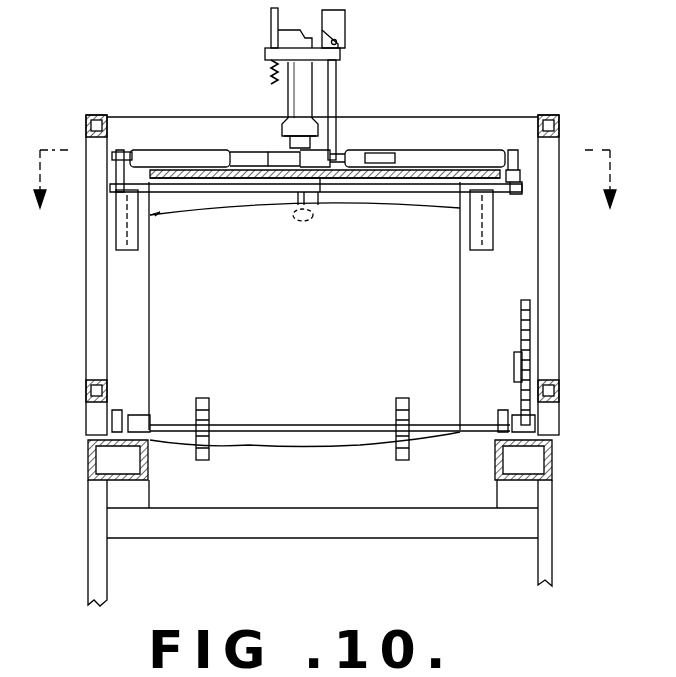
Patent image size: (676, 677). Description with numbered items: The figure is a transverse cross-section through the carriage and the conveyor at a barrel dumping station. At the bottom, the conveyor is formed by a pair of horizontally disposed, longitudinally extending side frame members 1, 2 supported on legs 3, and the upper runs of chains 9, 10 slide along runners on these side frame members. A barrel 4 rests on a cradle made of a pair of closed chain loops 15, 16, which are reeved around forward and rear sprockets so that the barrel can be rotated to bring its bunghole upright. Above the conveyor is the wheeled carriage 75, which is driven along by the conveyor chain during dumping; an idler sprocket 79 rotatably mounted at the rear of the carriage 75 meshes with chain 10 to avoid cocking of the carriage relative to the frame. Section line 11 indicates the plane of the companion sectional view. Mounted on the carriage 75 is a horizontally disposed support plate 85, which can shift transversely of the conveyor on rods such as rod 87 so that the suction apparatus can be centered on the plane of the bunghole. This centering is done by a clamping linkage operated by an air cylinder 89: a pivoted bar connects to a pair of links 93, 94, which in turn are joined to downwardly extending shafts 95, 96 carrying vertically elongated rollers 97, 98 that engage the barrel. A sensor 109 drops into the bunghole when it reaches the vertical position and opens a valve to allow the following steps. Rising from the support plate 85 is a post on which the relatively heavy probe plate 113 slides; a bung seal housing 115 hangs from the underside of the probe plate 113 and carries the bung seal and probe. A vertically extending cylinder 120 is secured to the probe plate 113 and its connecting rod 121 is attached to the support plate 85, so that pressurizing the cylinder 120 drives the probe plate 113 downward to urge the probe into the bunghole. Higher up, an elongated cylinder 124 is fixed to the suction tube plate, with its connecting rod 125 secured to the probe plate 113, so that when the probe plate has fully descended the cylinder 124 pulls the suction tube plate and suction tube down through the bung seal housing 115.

The side frame member 1 is at (88, 456).
The side frame member 2 is at (552, 462).
The legs 3 is at (92, 574).
The barrel 4 is at (316, 448).
The chain 9 is at (142, 405).
The chain 10 is at (520, 410).
The section line 11- 11 is at (332, 191).
The loop 15 is at (204, 462).
The loop 16 is at (400, 462).
The carriage 75 is at (548, 108).
The idler sprocket 79 is at (532, 342).
The support plate 85 is at (404, 150).
The rod 87 is at (432, 196).
The air cylinder 89 is at (264, 198).
The link 93 is at (178, 148).
The link 94 is at (448, 150).
The shaft 95 is at (117, 162).
The shaft 96 is at (500, 150).
The roller 97 is at (116, 236).
The roller 98 is at (494, 236).
The sensor 109 is at (292, 212).
The probe plate 113 is at (340, 56).
The bung seal housing 115 is at (286, 97).
The cylinder 120 is at (346, 24).
The connecting rod 121 is at (338, 100).
The cylinder 124 is at (269, 57).
The connecting rod 125 is at (270, 26).